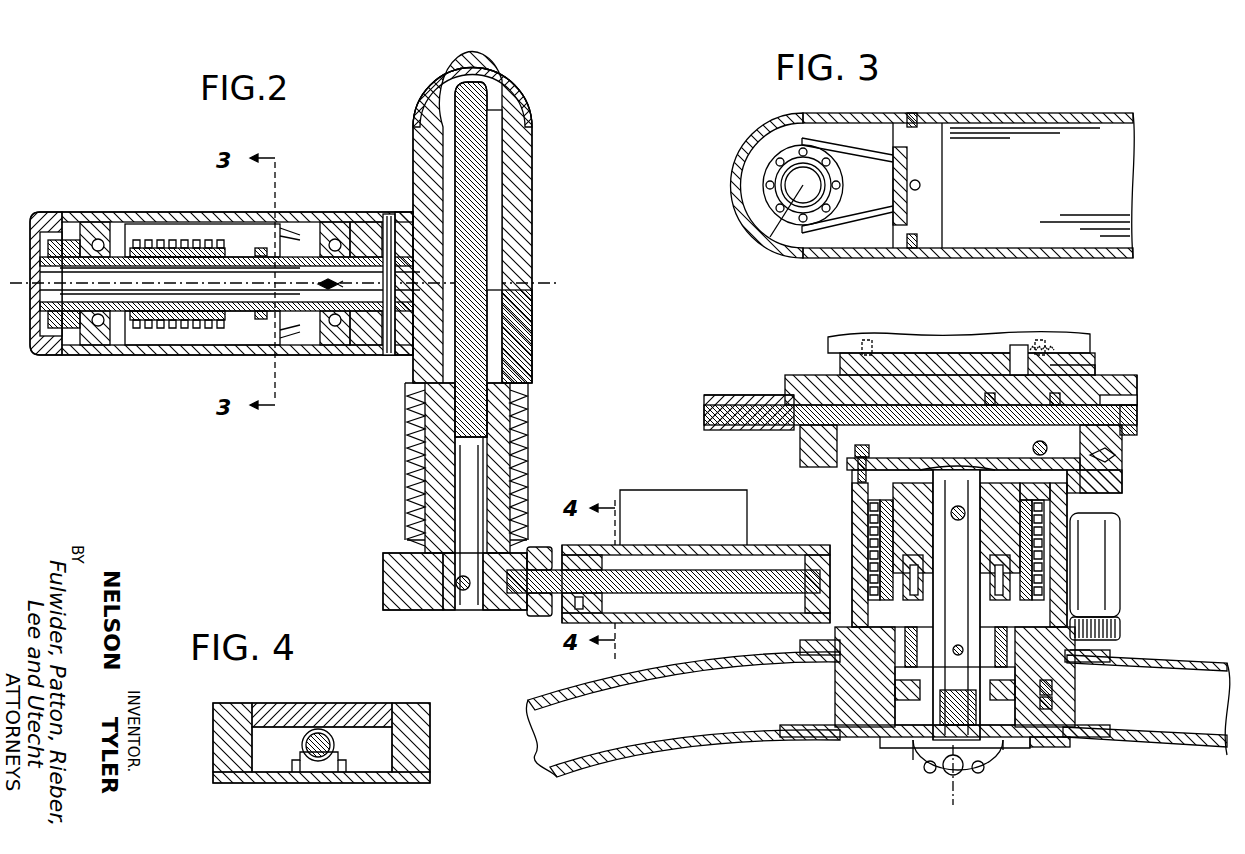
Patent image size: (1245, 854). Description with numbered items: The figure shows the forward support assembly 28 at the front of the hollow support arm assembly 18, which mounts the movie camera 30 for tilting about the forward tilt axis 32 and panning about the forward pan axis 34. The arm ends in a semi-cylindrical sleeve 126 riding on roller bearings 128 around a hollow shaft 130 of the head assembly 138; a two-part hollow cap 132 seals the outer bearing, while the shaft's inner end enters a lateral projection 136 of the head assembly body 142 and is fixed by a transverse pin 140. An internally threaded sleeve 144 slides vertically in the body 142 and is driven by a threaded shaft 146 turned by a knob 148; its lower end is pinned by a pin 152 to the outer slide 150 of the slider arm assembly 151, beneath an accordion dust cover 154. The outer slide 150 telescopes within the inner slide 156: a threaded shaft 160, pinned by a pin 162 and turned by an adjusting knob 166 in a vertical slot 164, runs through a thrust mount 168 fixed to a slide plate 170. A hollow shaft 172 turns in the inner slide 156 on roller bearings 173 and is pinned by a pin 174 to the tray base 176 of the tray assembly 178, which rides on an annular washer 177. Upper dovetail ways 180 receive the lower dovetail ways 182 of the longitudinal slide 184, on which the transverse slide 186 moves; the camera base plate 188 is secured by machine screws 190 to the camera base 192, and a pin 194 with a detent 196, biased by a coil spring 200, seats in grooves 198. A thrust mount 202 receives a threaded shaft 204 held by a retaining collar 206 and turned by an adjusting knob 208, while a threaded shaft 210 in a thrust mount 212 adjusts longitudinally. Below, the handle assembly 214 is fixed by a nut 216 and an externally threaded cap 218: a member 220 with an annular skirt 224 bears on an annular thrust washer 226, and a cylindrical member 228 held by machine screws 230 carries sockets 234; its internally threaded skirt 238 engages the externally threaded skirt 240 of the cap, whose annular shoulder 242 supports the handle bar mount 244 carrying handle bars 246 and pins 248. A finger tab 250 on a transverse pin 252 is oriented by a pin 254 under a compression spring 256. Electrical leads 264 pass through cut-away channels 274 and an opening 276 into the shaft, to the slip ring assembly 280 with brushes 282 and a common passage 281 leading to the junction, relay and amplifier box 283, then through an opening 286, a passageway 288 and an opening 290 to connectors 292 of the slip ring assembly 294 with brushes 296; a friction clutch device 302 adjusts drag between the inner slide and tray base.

In FIG. 2, the elongated support arm assembly 18 is at (158, 212).
In FIG. 3, the elongated support arm assembly 18 is at (1078, 112).
In FIG. 2, the forward support assembly 28 is at (702, 410).
In FIG. 2, the movie camera 30 is at (970, 333).
In FIG. 2, the forward tilt axis 32 is at (548, 283).
In FIG. 2, the forward pan axis 34 is at (962, 800).
In FIG. 3, the semi-cylindrical sleeve 126 is at (776, 120).
In FIG. 2, the roller bearings 128 is at (98, 238).
In FIG. 2, the hollow shaft 130 is at (386, 216).
In FIG. 3, the hollow shaft 130 is at (765, 235).
In FIG. 2, the two-part hollow cap 132 is at (48, 214).
In FIG. 2, the lateral projection 136 is at (365, 352).
In FIG. 2, the head assembly 138 is at (534, 190).
In FIG. 2, the transverse pin 140 is at (390, 358).
In FIG. 2, the head assembly body 142 is at (533, 344).
In FIG. 2, the internally threaded sleeve 144 is at (490, 222).
In FIG. 2, the threaded shaft 146 is at (490, 100).
In FIG. 2, the knob 148 is at (515, 103).
In FIG. 2, the outer slide 150 is at (396, 610).
In FIG. 4, the outer slide 150 is at (296, 720).
In FIG. 2, the slider arm assembly 151 is at (380, 580).
In FIG. 2, the pin 152 is at (466, 592).
In FIG. 2, the dust cover 154 is at (527, 450).
In FIG. 2, the inner slide 156 is at (683, 545).
In FIG. 4, the inner slide 156 is at (410, 705).
In FIG. 2, the threaded shaft 160 is at (713, 572).
In FIG. 4, the threaded shaft 160 is at (332, 746).
In FIG. 2, the pin 162 is at (812, 560).
In FIG. 2, the vertical slot 164 is at (542, 615).
In FIG. 2, the adjusting knob 166 is at (542, 548).
In FIG. 2, the thrust mount 168 is at (600, 602).
In FIG. 4, the thrust mount 168 is at (355, 783).
In FIG. 2, the slide plate 170 is at (695, 623).
In FIG. 4, the slide plate 170 is at (258, 783).
In FIG. 2, the hollow shaft 172 is at (1005, 470).
In FIG. 2, the roller bearings 173 is at (1015, 570).
In FIG. 2, the pin 174 is at (930, 472).
In FIG. 2, the tray base 176 is at (1122, 492).
In FIG. 2, the annular washer 177 is at (1012, 545).
In FIG. 2, the tray assembly 178 is at (1138, 384).
In FIG. 2, the upper dovetail ways 180 is at (1122, 458).
In FIG. 2, the lower dovetail ways 182 is at (1122, 470).
In FIG. 2, the longitudinal slide 184 is at (800, 446).
In FIG. 2, the transverse slide 186 is at (1137, 398).
In FIG. 2, the camera base plate 188 is at (786, 380).
In FIG. 2, the machine screws 190 is at (868, 345).
In FIG. 2, the camera base 192 is at (838, 360).
In FIG. 2, the pin 194 is at (1100, 372).
In FIG. 2, the detent 196 is at (1003, 366).
In FIG. 2, the grooves 198 is at (1036, 398).
In FIG. 2, the coil spring 200 is at (1046, 370).
In FIG. 2, the thrust mount 202 is at (1035, 400).
In FIG. 2, the threaded shaft 204 is at (730, 424).
In FIG. 2, the retaining collar 206 is at (1137, 422).
In FIG. 2, the adjusting knob 208 is at (720, 395).
In FIG. 2, the threaded shaft 210 is at (1035, 447).
In FIG. 2, the thrust mount 212 is at (873, 457).
In FIG. 2, the handle assembly 214 is at (1192, 661).
In FIG. 2, the nut 216 is at (1040, 737).
In FIG. 2, the externally threaded cap 218 is at (1010, 755).
In FIG. 2, the member 220 is at (812, 640).
In FIG. 2, the annular skirt 224 is at (1060, 686).
In FIG. 2, the annular thrust washer 226 is at (1120, 620).
In FIG. 2, the cylindrical member 228 is at (852, 682).
In FIG. 2, the machine screws 230 is at (852, 665).
In FIG. 2, the sockets 234 is at (1108, 660).
In FIG. 2, the internally threaded skirt 238 is at (852, 706).
In FIG. 2, the externally threaded skirt 240 is at (1060, 700).
In FIG. 2, the annular shoulder 242 is at (912, 760).
In FIG. 2, the handle bar mount 244 is at (865, 742).
In FIG. 2, the handle bars 246 is at (705, 743).
In FIG. 2, the pins 248 is at (830, 700).
In FIG. 2, the finger tab 250 is at (938, 790).
In FIG. 2, the transverse pin 252 is at (922, 775).
In FIG. 2, the pin 254 is at (985, 768).
In FIG. 2, the compression spring 256 is at (905, 742).
In FIG. 2, the electrical leads 264 is at (852, 735).
In FIG. 2, the cut-away channels 274 is at (1060, 660).
In FIG. 2, the opening 276 is at (957, 620).
In FIG. 2, the slip ring assembly 280 is at (855, 498).
In FIG. 2, the common passage 281 is at (855, 520).
In FIG. 2, the brushes 282 is at (1045, 515).
In FIG. 2, the junction, relay and amplifier box 283 is at (645, 490).
In FIG. 2, the opening 286 is at (420, 502).
In FIG. 2, the passageway 288 is at (410, 398).
In FIG. 2, the opening 290 is at (318, 290).
In FIG. 2, the connectors 292 is at (263, 248).
In FIG. 3, the connectors 292 is at (760, 205).
In FIG. 2, the slip ring assembly 294 is at (228, 247).
In FIG. 3, the slip ring assembly 294 is at (766, 178).
In FIG. 3, the brushes 296 is at (862, 148).
In FIG. 2, the friction clutch device 302 is at (1118, 545).